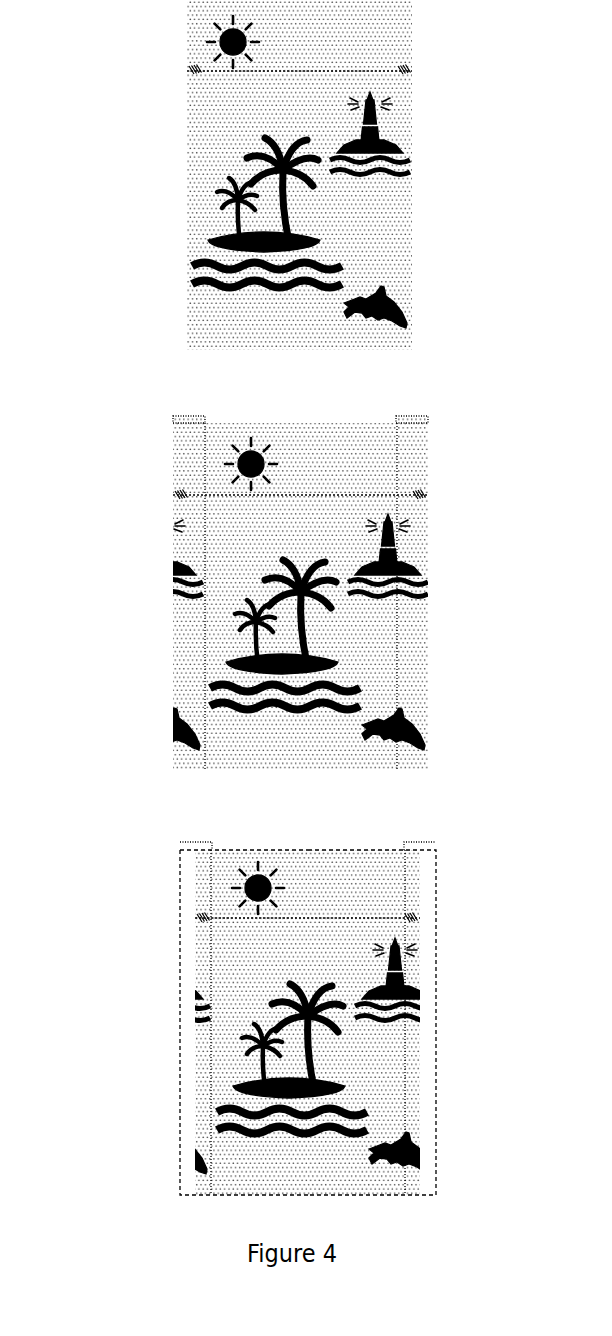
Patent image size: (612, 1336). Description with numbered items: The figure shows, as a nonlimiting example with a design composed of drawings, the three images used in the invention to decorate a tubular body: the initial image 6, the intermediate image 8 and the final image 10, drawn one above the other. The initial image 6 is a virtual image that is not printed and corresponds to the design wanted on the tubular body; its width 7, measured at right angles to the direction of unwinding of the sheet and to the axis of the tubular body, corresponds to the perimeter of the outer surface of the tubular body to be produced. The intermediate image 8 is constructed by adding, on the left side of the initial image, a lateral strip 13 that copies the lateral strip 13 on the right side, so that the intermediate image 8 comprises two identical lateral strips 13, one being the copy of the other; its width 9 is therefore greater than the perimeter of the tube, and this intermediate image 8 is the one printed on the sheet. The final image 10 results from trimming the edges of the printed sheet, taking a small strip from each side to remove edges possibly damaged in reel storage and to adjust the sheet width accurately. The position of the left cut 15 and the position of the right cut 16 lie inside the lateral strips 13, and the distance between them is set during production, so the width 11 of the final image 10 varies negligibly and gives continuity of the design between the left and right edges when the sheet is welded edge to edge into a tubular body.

The initial image 6 is at (160, 169).
The width of the initial image 7 is at (203, 70).
The intermediate image 8 is at (132, 571).
The width of the intermediate image 9 is at (222, 494).
The final image 10 is at (140, 979).
The width of the final image 11 is at (230, 918).
The lateral strip 13 is at (416, 413).
The position of the left cut 15 is at (194, 1067).
The position of the right cut 16 is at (418, 1057).